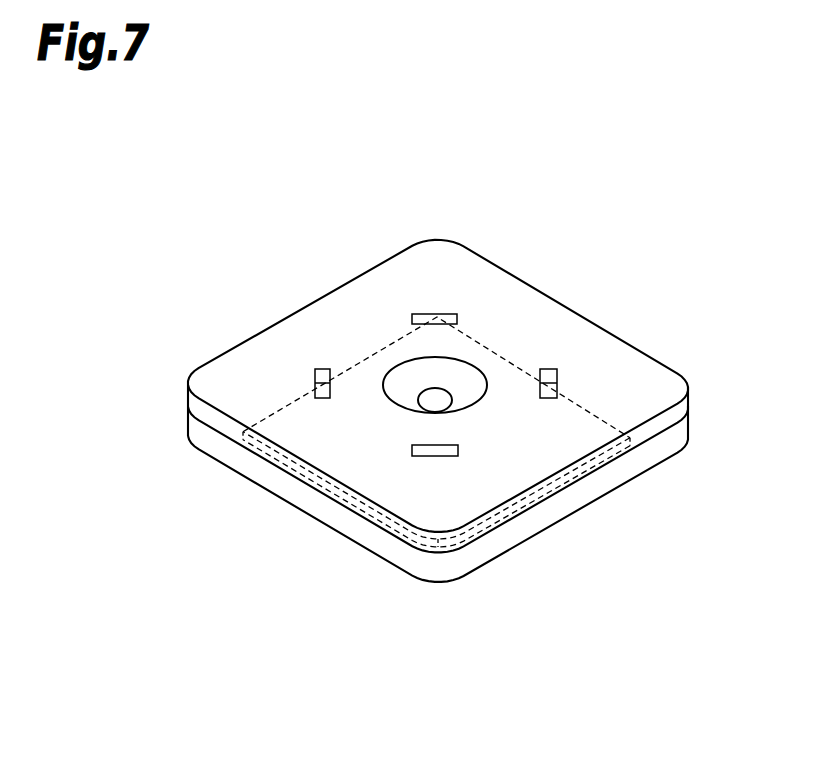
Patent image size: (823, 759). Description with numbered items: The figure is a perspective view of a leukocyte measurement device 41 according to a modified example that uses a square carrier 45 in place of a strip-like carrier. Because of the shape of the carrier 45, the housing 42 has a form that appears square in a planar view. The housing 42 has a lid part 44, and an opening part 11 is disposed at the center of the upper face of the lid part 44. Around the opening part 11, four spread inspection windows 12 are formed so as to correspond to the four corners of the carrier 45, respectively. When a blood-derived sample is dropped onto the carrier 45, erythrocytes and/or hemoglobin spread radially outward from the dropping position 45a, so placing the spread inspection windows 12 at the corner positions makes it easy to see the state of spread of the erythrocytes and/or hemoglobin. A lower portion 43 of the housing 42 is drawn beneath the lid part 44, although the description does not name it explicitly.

The leukocyte measurement device 41 is at (298, 250).
The housing 42 is at (589, 304).
The lower substrate 43 is at (632, 458).
The lid part 44 is at (632, 374).
The carrier 45 is at (387, 473).
The dropping position 45a is at (434, 400).
The opening part 11 is at (415, 373).
The spread inspection windows 12 is at (436, 317).